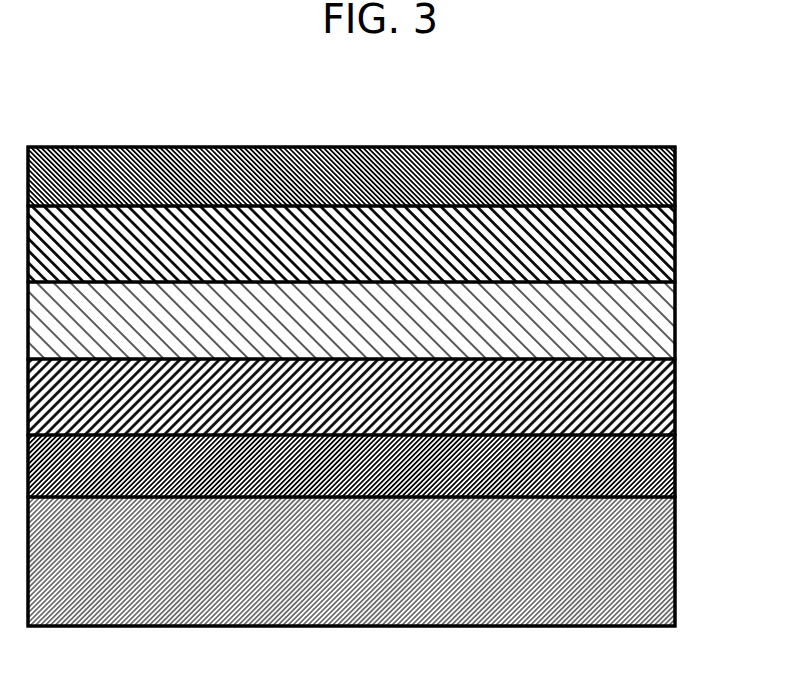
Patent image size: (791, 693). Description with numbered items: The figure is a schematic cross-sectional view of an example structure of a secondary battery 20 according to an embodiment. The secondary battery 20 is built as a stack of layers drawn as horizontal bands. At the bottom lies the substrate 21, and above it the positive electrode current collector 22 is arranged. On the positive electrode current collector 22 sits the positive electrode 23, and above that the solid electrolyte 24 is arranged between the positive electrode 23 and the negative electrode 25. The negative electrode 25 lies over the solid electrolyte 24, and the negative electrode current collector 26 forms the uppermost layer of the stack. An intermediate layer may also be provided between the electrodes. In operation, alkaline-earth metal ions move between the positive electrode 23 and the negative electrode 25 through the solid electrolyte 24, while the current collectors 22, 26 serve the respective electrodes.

The secondary battery 20 is at (728, 82).
The substrate 21 is at (645, 557).
The positive electrode current collector 22 is at (647, 463).
The positive electrode 23 is at (647, 393).
The solid electrolyte 24 is at (647, 318).
The negative electrode 25 is at (647, 247).
The negative electrode current collector 26 is at (647, 178).